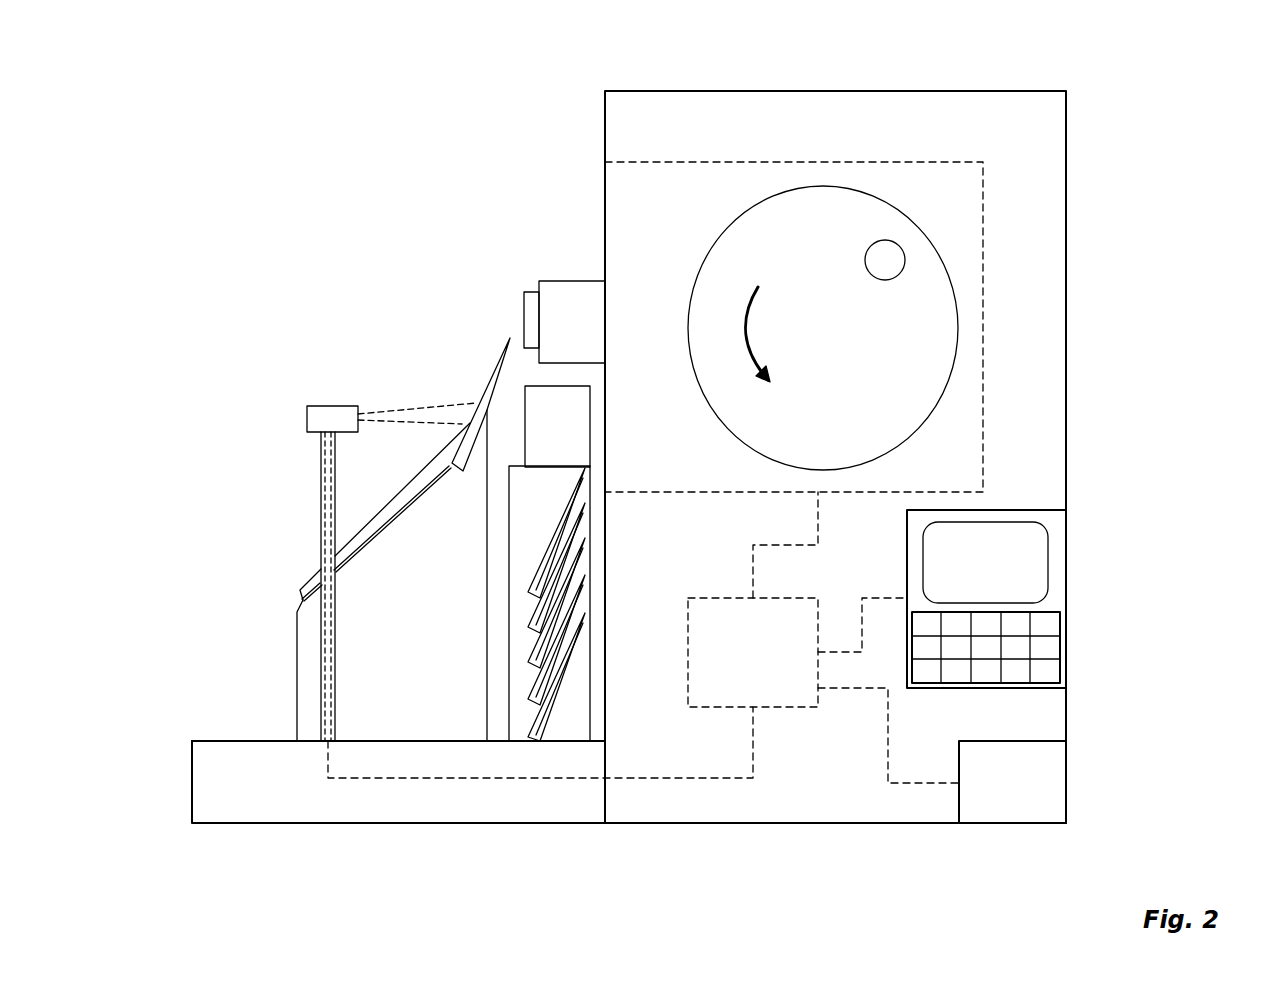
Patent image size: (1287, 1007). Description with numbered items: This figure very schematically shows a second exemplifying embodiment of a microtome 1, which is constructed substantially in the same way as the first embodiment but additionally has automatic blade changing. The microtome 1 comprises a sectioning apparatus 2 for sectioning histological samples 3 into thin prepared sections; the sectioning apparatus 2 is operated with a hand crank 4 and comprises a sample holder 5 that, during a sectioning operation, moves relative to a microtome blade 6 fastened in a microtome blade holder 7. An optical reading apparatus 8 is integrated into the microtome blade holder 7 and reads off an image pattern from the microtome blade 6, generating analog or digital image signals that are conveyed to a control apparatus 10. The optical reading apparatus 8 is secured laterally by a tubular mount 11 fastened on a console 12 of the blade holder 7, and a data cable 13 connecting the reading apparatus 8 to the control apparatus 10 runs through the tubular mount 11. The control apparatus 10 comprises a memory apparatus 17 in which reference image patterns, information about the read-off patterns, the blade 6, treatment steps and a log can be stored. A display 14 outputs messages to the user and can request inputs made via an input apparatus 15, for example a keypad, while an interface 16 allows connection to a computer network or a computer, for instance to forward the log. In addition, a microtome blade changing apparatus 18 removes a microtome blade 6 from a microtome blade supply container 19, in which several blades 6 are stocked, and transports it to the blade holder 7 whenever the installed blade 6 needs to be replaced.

The microtome 1 is at (1186, 88).
The sectioning apparatus 2 is at (694, 177).
The histological sample 3 is at (528, 312).
The hand crank 4 is at (897, 260).
The sample holder 5 is at (573, 298).
The microtome blade 6 is at (482, 400).
The microtome blade holder 7 is at (262, 472).
The optical reading apparatus 8 is at (337, 415).
The control apparatus 10 is at (698, 623).
The tubular mount 11 is at (320, 547).
The console 12 is at (306, 665).
The data cable 13 is at (420, 779).
The display 14 is at (1027, 562).
The input apparatus 15 is at (1042, 640).
The interface 16 is at (1042, 790).
The memory apparatus 17 is at (722, 670).
The microtome blade changing apparatus 18 is at (565, 417).
The microtome blade supply container 19 is at (458, 678).